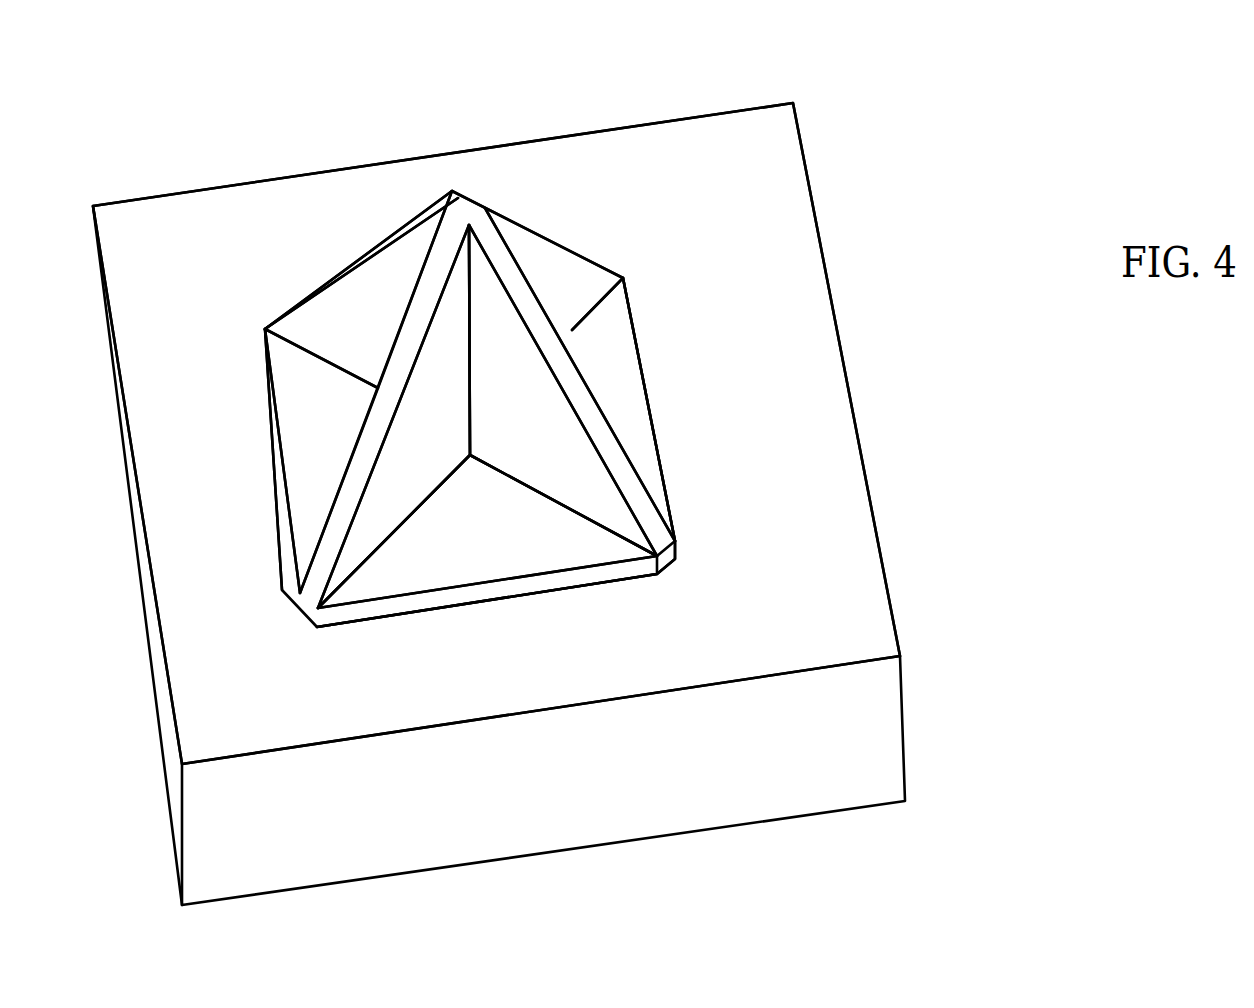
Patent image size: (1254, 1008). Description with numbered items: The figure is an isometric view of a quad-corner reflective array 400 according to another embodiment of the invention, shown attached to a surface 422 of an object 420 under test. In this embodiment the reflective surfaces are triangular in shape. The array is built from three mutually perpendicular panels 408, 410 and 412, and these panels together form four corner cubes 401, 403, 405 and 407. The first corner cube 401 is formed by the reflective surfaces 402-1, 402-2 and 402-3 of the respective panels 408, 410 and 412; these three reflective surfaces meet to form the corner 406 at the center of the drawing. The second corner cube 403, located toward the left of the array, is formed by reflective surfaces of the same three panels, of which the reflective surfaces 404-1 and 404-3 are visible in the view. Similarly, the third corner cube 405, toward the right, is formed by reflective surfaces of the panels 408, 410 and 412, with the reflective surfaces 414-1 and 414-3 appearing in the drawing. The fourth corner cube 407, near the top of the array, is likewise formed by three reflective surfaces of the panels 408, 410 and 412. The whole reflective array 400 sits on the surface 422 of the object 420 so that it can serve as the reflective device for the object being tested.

The quad-corner reflective array 400 is at (505, 187).
The corner cube 401 is at (437, 558).
The reflective surface 402-1 is at (480, 546).
The reflective surface 402-2 is at (465, 444).
The reflective surface 402-3 is at (567, 442).
The corner cube 403 is at (315, 472).
The reflective surface 404-1 is at (343, 444).
The reflective surface 404-3 is at (378, 335).
The corner cube 405 is at (608, 400).
The corner 406 is at (470, 455).
The corner cube 407 is at (400, 207).
The panel 408 is at (542, 597).
The panel 410 is at (538, 310).
The panel 412 is at (435, 277).
The reflective surface 414-1 is at (607, 367).
The reflective surface 414-3 is at (538, 260).
The object under test 420 is at (883, 505).
The surface 422 is at (790, 581).